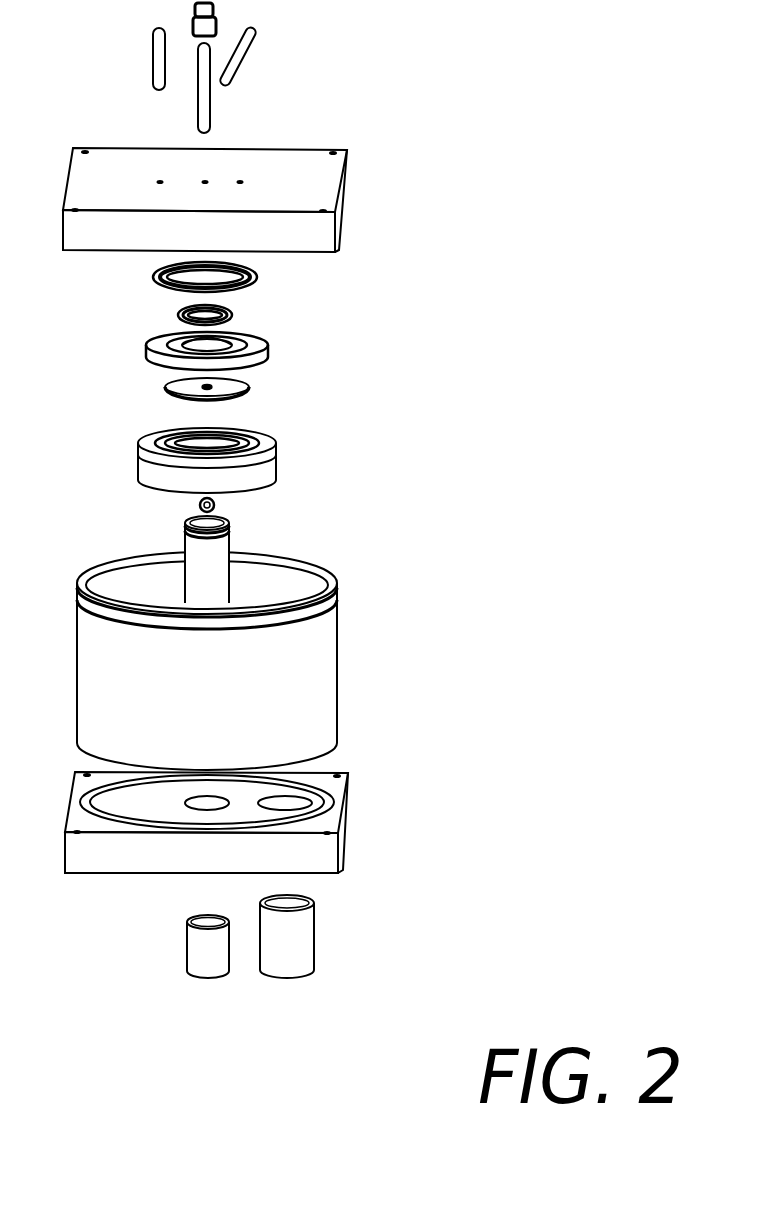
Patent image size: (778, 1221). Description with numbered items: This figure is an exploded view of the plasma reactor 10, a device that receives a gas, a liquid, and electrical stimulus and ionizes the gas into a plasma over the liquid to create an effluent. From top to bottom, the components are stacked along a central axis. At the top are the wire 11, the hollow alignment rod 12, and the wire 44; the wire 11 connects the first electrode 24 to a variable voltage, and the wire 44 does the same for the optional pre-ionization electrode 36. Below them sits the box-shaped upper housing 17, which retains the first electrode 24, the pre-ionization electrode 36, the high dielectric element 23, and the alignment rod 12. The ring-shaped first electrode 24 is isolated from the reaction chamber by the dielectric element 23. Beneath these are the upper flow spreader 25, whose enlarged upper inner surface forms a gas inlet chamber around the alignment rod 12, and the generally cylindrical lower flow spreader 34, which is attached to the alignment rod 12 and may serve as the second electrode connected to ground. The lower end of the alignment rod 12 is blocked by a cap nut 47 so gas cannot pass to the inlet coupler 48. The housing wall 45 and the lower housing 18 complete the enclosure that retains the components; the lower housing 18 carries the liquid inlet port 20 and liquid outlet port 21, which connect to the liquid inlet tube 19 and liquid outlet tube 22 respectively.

The plasma reactor 10 is at (413, 88).
The wire 11 is at (150, 60).
The alignment rod 12 is at (213, 118).
The wire 44 is at (248, 72).
The upper housing 17 is at (345, 228).
The first electrode 24 is at (258, 278).
The pre-ionization electrode 36 is at (237, 313).
The dielectric element 23 is at (263, 348).
The upper flow spreader 25 is at (252, 387).
The lower flow spreader 34 is at (280, 463).
The cap nut 47 is at (218, 503).
The inlet coupler 48 is at (233, 540).
The housing wall 45 is at (338, 697).
The lower housing 18 is at (347, 860).
The liquid inlet port 20 is at (195, 815).
The liquid outlet port 21 is at (317, 805).
The liquid inlet tube 19 is at (185, 960).
The liquid outlet tube 22 is at (318, 963).